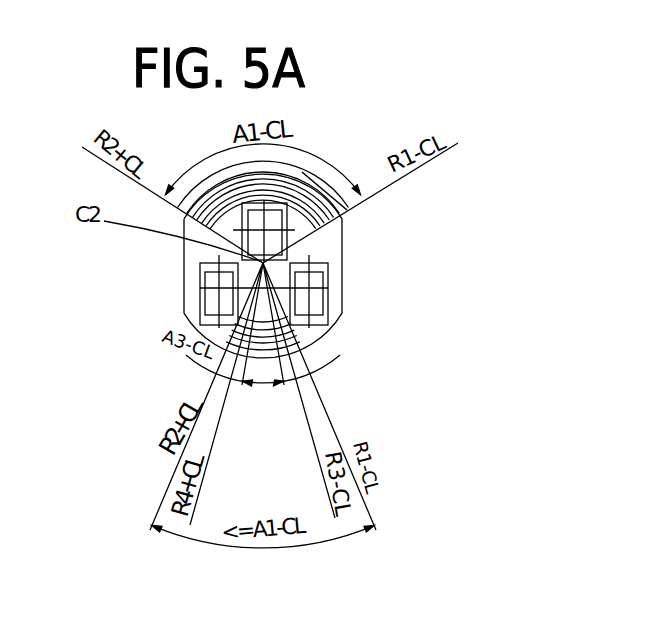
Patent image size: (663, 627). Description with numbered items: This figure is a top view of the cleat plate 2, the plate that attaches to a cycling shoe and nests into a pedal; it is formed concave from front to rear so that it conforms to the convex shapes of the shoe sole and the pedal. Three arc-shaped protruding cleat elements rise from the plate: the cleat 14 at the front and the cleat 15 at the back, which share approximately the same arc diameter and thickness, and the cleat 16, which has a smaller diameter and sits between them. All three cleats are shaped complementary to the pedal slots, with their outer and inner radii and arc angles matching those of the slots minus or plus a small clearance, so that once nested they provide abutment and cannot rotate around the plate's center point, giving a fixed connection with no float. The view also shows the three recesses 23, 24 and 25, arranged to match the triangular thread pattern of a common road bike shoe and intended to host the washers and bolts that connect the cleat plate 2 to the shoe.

The cleat plate 2 is at (343, 252).
The cleat 14 is at (293, 175).
The cleat 15 is at (300, 348).
The cleat 16 is at (343, 308).
The recess 23 is at (328, 278).
The recess 24 is at (290, 248).
The recess 25 is at (198, 293).